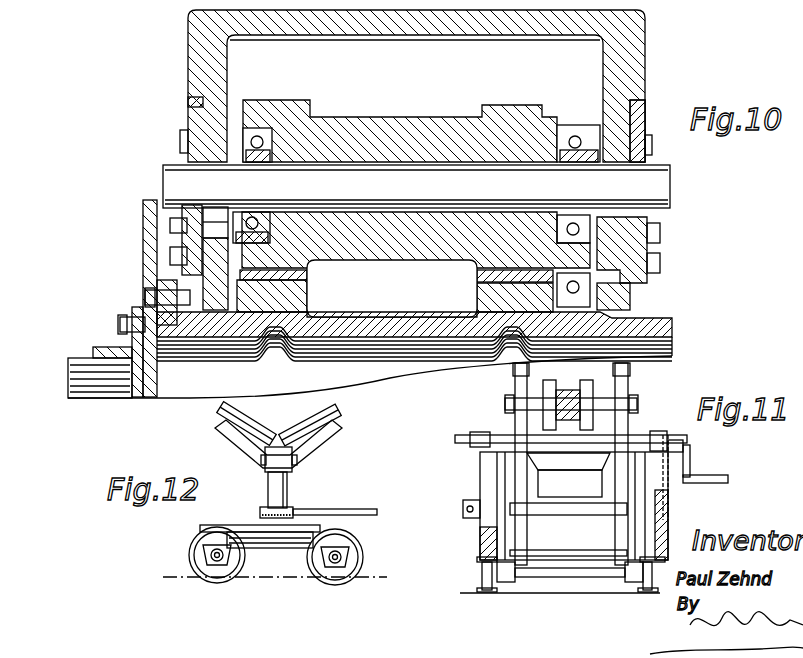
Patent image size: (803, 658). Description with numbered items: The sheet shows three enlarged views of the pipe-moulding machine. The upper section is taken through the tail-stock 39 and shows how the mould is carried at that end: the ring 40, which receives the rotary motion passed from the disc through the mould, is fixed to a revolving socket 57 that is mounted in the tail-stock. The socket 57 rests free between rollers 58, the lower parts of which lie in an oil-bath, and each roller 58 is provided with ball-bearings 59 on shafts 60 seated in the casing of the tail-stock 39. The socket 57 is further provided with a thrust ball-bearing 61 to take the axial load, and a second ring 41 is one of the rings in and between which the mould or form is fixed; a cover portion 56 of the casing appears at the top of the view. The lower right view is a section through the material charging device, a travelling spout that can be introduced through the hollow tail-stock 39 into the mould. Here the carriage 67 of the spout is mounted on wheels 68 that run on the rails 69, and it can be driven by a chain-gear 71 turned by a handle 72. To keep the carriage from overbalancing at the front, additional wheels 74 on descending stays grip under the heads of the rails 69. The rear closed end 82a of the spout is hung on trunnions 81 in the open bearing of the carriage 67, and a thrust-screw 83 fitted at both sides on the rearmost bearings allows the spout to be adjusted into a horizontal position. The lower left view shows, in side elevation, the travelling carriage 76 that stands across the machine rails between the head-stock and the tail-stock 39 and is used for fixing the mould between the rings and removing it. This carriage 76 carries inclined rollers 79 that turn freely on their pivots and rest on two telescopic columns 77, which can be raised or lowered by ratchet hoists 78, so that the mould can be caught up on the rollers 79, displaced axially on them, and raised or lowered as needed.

In FIG. 10, the housing cover 56 is at (164, 5).
In FIG. 10, the tail-stock 39 is at (453, 24).
In FIG. 10, the rollers 58 is at (393, 120).
In FIG. 10, the ball-bearings 59 is at (257, 136).
In FIG. 10, the shafts 60 is at (672, 183).
In FIG. 10, the revolving socket 57 is at (372, 320).
In FIG. 10, the thrust ball-bearing 61 is at (630, 284).
In FIG. 10, the ring 40 is at (143, 238).
In FIG. 10, the ring 41 is at (98, 345).
In FIG. 11, the thrust-screw 83 is at (522, 380).
In FIG. 11, the trunnions 81 is at (513, 397).
In FIG. 11, the rear closed end of the spout 82a is at (572, 392).
In FIG. 11, the handle 72 is at (700, 474).
In FIG. 11, the chain-gear 71 is at (670, 482).
In FIG. 11, the carriage of the spout 67 is at (483, 480).
In FIG. 11, the wheels 68 is at (482, 537).
In FIG. 11, the wheels 74 is at (482, 577).
In FIG. 11, the rails 69 is at (478, 590).
In FIG. 12, the inclined rollers 79 is at (276, 432).
In FIG. 12, the telescopic columns 77 is at (268, 492).
In FIG. 12, the ratchet hoists 78 is at (300, 512).
In FIG. 12, the travelling carriage 76 is at (270, 552).